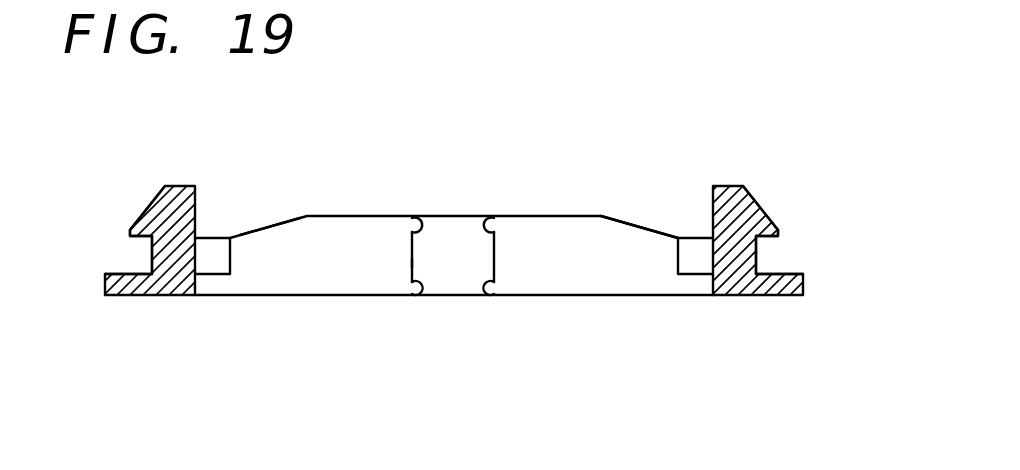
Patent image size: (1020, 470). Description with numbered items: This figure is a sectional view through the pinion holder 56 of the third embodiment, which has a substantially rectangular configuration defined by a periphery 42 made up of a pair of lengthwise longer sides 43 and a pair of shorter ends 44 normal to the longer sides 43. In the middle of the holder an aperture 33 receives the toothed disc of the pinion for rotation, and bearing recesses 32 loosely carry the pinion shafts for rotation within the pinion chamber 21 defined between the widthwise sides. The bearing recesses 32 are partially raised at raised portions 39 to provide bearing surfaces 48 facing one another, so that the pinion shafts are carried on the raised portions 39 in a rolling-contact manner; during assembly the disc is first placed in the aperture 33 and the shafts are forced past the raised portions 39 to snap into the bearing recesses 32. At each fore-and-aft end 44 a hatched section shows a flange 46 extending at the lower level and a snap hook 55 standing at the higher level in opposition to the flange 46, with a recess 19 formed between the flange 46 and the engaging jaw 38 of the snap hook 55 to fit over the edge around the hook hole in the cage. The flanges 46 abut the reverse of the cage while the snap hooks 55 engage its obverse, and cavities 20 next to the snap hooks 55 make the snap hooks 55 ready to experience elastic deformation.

The recess 19 is at (152, 262).
The cavity 20 is at (228, 257).
The pinion chamber 21 is at (457, 272).
The bearing recess 32 is at (494, 254).
The aperture 33 is at (602, 252).
The engaging jaw 38 is at (136, 229).
The raised portion 39 is at (415, 219).
The periphery 42 is at (152, 253).
The longer side 43 is at (303, 257).
The shorter end 44 is at (460, 232).
The flange 46 is at (130, 288).
The bearing surface 48 is at (412, 262).
The snap hook 55 is at (160, 208).
The pinion holder 56 is at (681, 200).